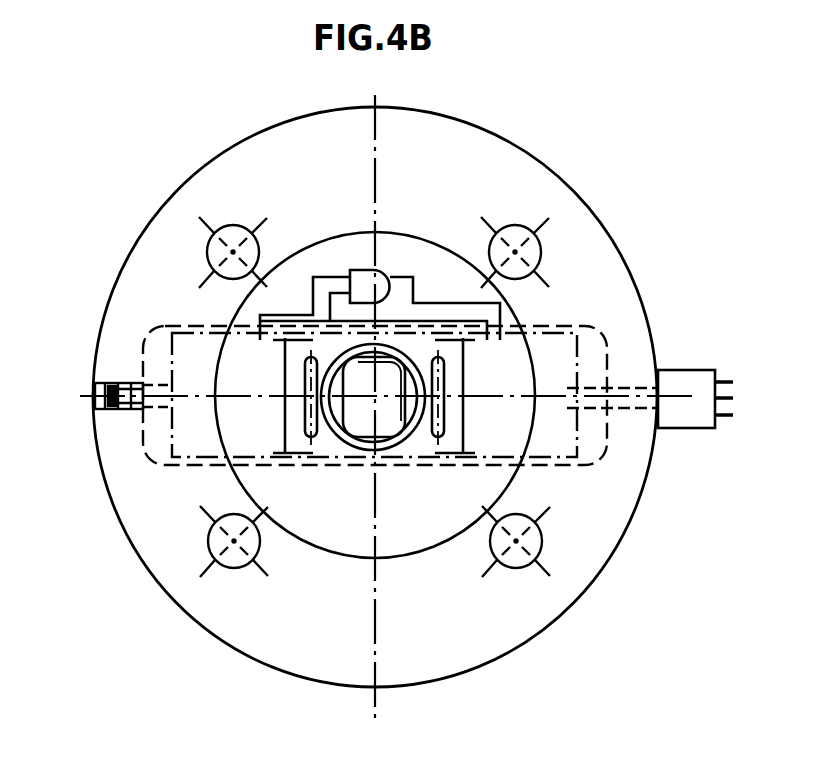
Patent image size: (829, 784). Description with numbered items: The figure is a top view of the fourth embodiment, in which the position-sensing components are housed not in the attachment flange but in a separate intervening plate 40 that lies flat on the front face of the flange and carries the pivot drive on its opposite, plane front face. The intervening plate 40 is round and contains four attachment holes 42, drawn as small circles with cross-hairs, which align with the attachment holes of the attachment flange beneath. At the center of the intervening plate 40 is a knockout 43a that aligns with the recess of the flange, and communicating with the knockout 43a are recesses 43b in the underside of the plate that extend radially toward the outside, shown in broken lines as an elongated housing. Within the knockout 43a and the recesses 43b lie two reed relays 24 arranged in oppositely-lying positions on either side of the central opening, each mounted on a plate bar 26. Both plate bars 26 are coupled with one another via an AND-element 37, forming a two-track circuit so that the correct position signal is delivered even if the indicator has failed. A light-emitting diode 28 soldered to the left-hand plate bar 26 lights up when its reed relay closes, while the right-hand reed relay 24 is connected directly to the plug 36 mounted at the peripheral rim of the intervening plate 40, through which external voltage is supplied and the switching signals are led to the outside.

The reed relay 24 is at (328, 437).
The plate bar 26 is at (238, 355).
The light-emitting diode 28 is at (100, 387).
The plug 36 is at (697, 380).
The AND-element 37 is at (392, 262).
The intervening plate 40 is at (485, 172).
The attachment holes 42 is at (523, 247).
The knockout 43a is at (593, 343).
The recesses 43b is at (158, 442).